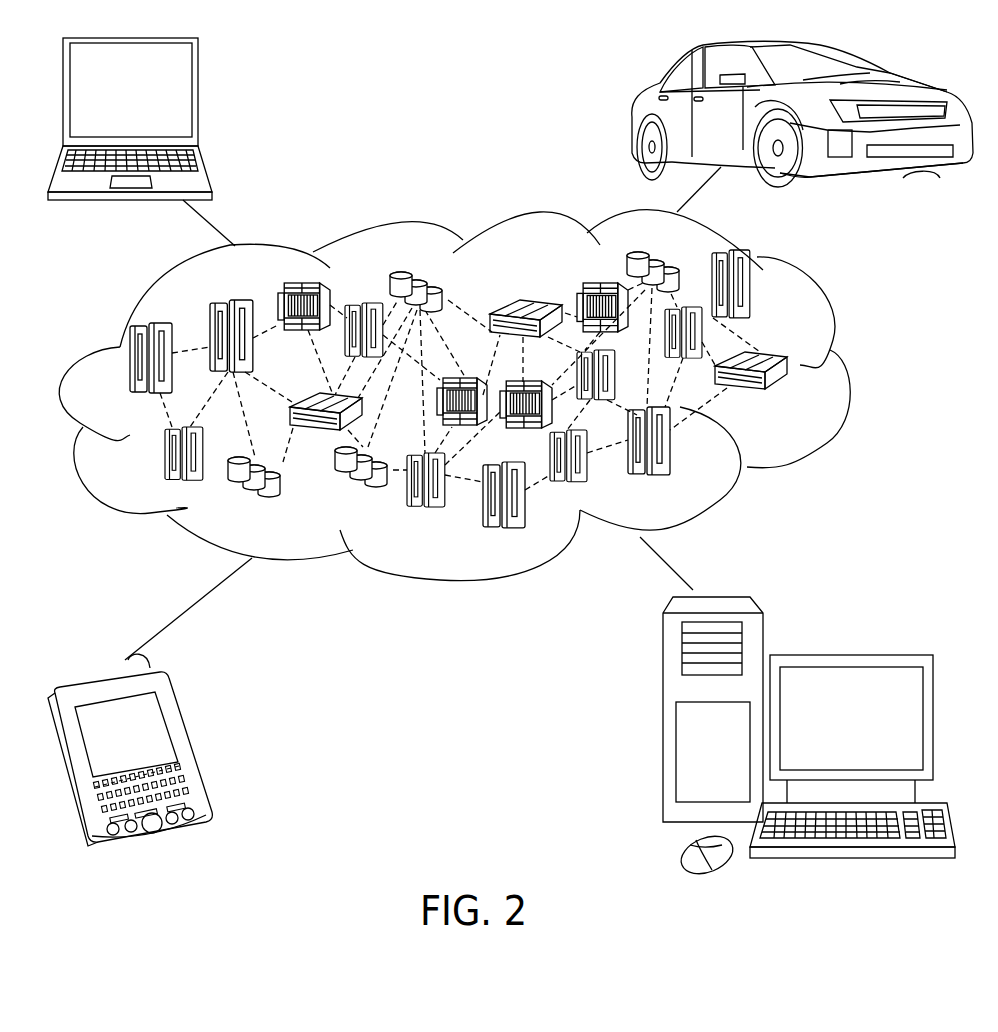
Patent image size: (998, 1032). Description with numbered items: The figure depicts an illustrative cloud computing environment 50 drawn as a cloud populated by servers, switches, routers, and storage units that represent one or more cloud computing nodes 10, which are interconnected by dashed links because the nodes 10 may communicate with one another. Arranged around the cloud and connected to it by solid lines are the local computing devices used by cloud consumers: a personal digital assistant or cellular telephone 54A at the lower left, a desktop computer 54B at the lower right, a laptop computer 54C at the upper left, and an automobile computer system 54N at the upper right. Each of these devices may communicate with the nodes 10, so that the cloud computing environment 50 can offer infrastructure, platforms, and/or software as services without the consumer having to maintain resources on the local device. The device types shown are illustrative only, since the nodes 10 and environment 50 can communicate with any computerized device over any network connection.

The cloud computing nodes 10 is at (797, 399).
The cloud computing environment 50 is at (848, 368).
The personal digital assistant or cellular telephone 54A is at (190, 748).
The desktop computer 54B is at (850, 655).
The laptop computer 54C is at (199, 100).
The automobile computer system 54N is at (632, 117).